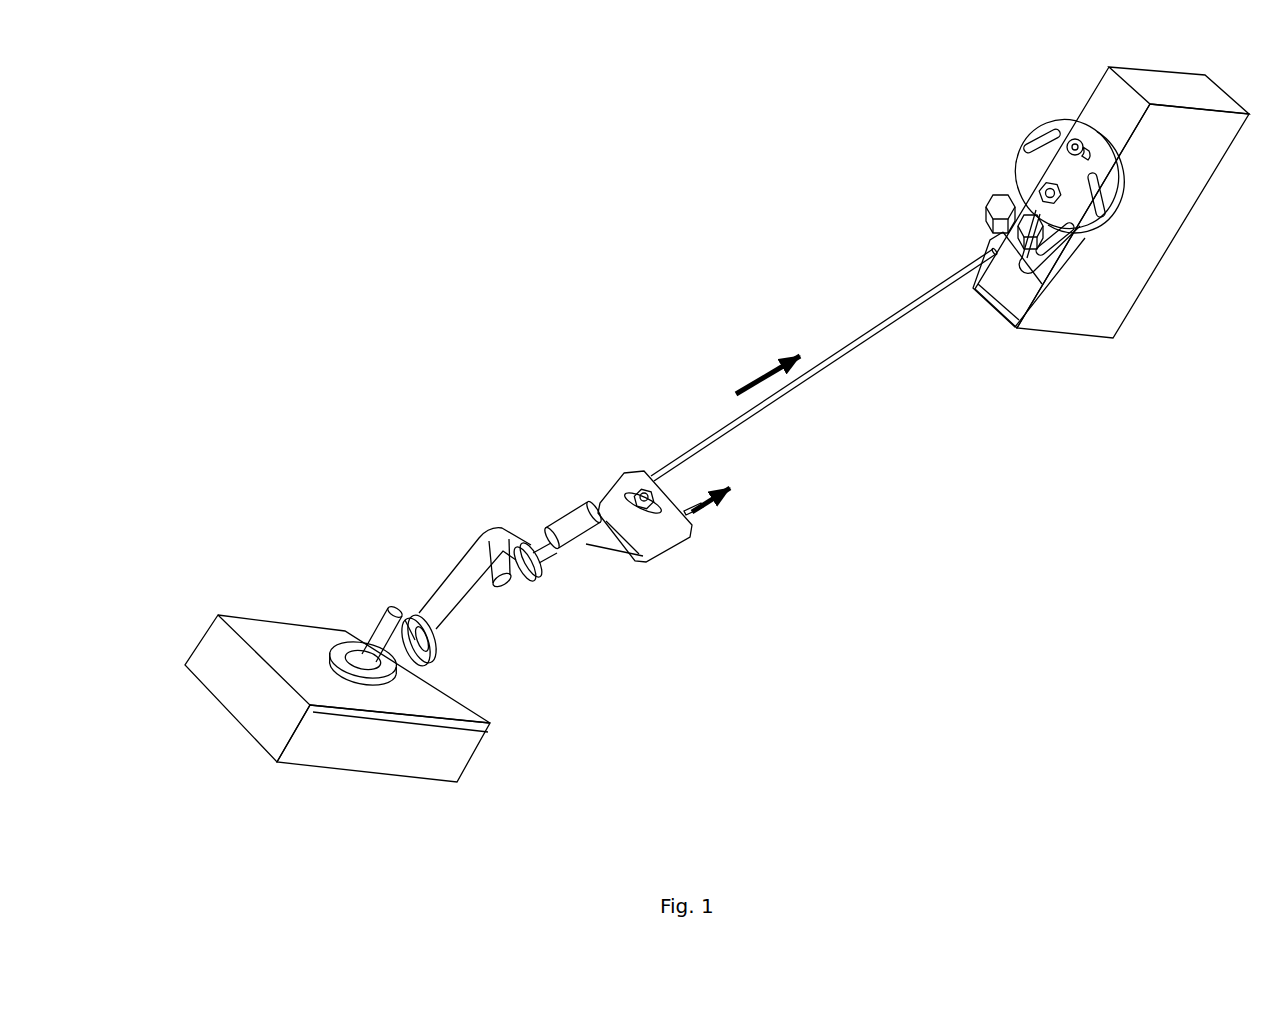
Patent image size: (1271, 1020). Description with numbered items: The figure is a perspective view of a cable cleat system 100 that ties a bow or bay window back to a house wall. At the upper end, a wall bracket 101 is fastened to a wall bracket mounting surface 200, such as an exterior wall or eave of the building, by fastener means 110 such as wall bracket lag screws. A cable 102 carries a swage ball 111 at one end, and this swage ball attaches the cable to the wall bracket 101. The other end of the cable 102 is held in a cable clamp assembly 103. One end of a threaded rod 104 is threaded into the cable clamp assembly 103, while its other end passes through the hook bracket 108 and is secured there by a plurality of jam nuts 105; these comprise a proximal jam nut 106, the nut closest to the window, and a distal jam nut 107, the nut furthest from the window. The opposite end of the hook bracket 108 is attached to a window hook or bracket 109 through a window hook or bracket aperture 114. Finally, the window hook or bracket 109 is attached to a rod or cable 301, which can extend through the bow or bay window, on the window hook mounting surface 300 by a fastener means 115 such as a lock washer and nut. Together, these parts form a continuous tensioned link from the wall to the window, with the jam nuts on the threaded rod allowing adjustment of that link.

The cable cleat system 100 is at (744, 240).
The wall bracket mounting surface 200 is at (1078, 194).
The wall bracket 101 is at (980, 188).
The fastener means 110 is at (1048, 193).
The swage ball 111 is at (1043, 318).
The cable 102 is at (824, 364).
The cable clamp assembly 103 is at (691, 522).
The threaded rod 104 is at (543, 533).
The plurality of jam nuts 105 is at (548, 566).
The proximal jam nut 106 is at (546, 584).
The distal jam nut 107 is at (563, 573).
The hook bracket 108 is at (436, 537).
The window hook or bracket 109 is at (525, 657).
The window hook or bracket aperture 114 is at (434, 624).
The fastener means 115 is at (320, 605).
The rod or cable 301 is at (467, 690).
The window hook mounting surface 300 is at (383, 707).